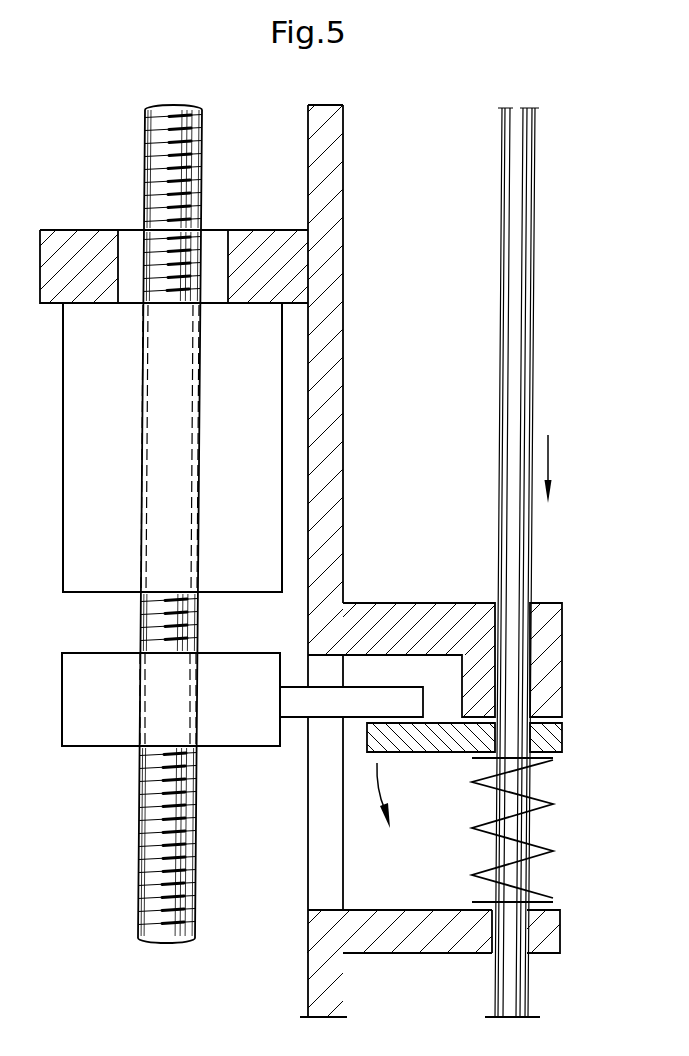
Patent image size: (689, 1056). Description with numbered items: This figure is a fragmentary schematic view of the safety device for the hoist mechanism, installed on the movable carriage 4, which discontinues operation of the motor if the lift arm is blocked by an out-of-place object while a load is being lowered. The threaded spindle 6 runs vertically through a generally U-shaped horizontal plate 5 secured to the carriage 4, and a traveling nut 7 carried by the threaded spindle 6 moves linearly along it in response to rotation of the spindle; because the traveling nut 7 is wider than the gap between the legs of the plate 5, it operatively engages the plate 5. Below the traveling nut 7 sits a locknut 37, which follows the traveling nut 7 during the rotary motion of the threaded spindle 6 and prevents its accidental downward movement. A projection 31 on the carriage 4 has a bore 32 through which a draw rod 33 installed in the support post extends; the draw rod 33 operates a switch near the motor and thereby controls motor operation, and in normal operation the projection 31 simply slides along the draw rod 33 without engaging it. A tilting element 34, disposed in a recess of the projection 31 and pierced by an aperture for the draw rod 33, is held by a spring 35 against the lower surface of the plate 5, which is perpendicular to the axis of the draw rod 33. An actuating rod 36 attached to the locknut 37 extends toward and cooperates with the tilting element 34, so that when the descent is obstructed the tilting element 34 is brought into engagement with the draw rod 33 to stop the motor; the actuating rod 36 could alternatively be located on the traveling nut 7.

The movable carriage 4 is at (340, 405).
The horizontal plate 5 is at (265, 238).
The threaded spindle 6 is at (198, 154).
The traveling nut 7 is at (63, 463).
The projection 31 is at (397, 613).
The bore 32 is at (534, 608).
The draw rod 33 is at (508, 482).
The tilting element 34 is at (433, 755).
The spring 35 is at (478, 828).
The actuating rod 36 is at (325, 708).
The locknut 37 is at (80, 730).